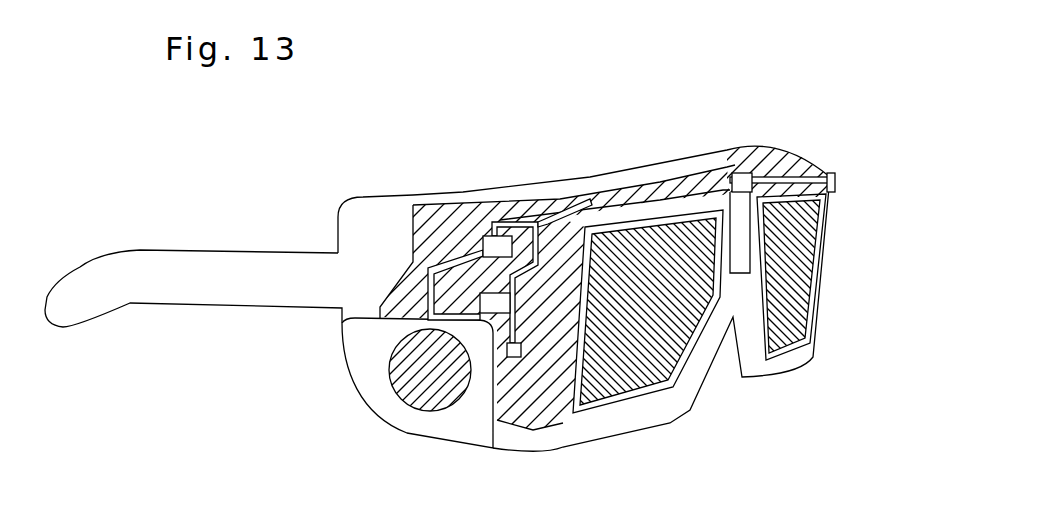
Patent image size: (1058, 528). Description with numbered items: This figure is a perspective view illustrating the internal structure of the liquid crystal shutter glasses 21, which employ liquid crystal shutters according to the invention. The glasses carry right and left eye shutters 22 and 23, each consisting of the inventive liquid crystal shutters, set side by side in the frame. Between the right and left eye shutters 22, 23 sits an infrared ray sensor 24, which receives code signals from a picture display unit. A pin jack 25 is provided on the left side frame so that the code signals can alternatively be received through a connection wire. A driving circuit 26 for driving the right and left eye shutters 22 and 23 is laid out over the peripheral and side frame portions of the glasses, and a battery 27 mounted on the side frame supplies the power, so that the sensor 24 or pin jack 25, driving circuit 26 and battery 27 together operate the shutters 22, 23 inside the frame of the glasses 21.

The liquid crystal shutter glasses 21 is at (650, 157).
The right eye shutter 22 is at (633, 378).
The left eye shutter 23 is at (778, 352).
The infrared ray sensor 24 is at (747, 173).
The pin jack 25 is at (840, 176).
The driving circuit 26 is at (600, 177).
The battery 27 is at (417, 387).